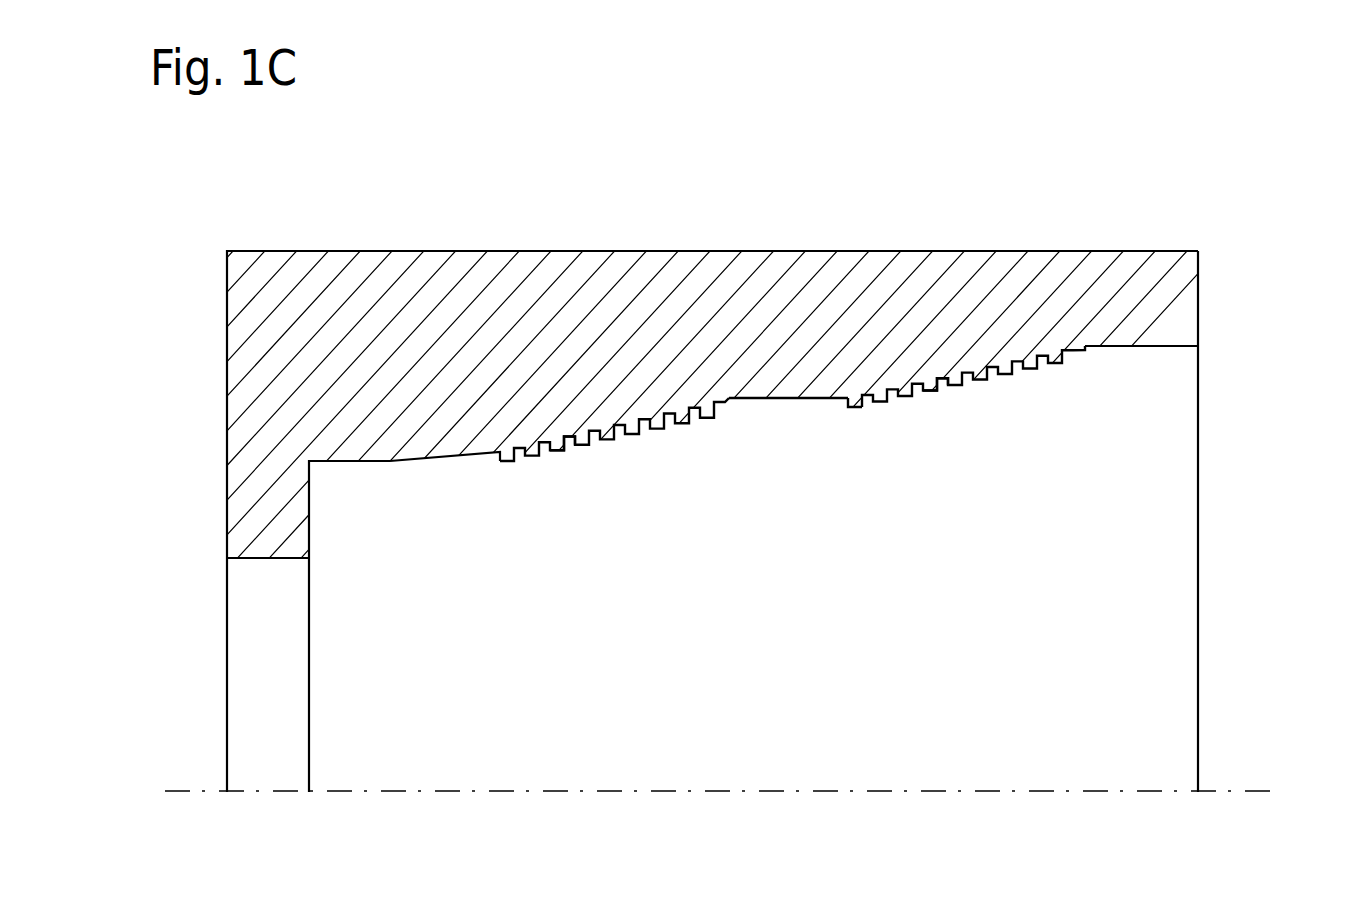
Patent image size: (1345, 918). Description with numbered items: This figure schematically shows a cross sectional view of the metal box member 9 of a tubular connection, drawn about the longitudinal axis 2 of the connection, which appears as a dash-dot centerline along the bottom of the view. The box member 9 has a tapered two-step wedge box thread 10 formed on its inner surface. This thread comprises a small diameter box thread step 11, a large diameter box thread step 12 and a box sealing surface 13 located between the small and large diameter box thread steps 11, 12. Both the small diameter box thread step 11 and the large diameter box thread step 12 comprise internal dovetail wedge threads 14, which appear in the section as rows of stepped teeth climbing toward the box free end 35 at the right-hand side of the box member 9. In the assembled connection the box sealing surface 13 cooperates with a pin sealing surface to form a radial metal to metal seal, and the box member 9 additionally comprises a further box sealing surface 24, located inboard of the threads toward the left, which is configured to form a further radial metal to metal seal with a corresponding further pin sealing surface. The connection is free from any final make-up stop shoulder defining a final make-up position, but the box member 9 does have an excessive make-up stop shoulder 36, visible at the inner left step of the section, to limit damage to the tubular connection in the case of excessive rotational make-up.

The metal box member 9 is at (335, 242).
The box free end 35 is at (1205, 292).
The excessive make-up stop shoulder 36 is at (315, 518).
The further box sealing surface 24 is at (435, 470).
The internal dovetail wedge threads 14 is at (575, 462).
The small diameter box thread step 11 is at (627, 452).
The tapered two-step wedge box thread 10 is at (758, 445).
The box sealing surface 13 is at (817, 413).
The large diameter box thread step 12 is at (1000, 393).
The longitudinal axis 2 is at (1241, 792).